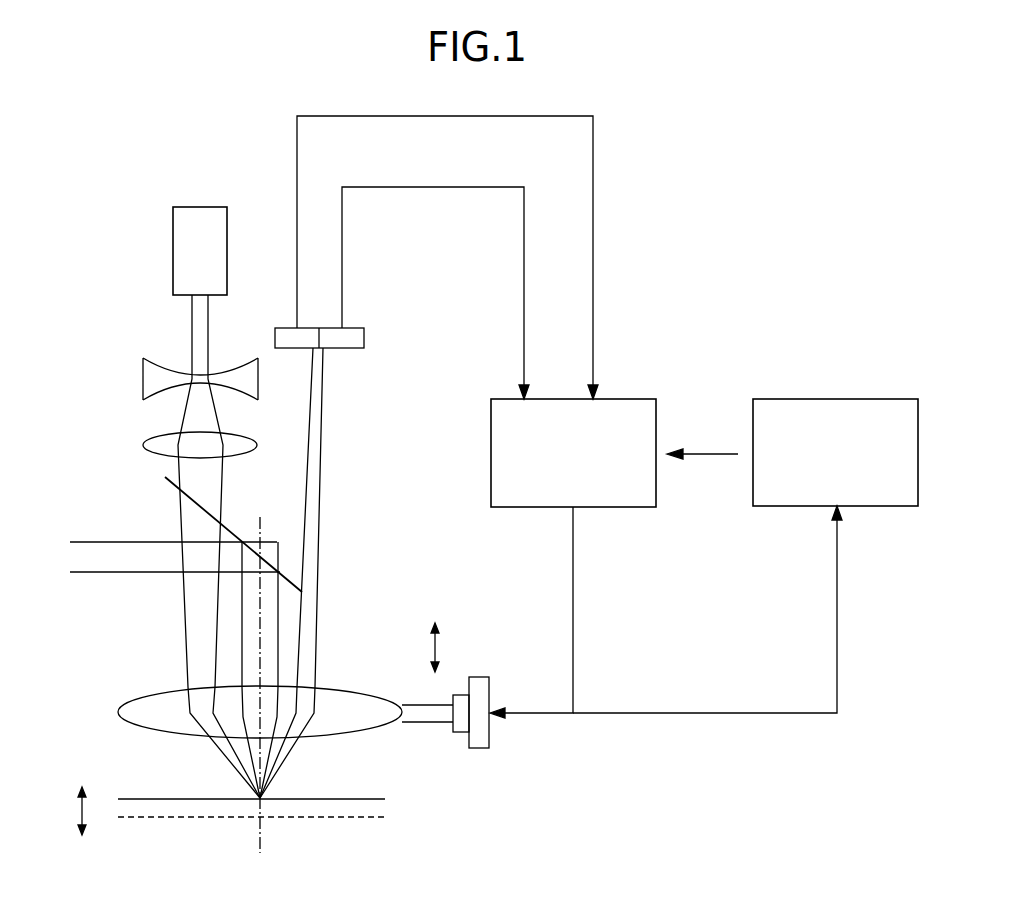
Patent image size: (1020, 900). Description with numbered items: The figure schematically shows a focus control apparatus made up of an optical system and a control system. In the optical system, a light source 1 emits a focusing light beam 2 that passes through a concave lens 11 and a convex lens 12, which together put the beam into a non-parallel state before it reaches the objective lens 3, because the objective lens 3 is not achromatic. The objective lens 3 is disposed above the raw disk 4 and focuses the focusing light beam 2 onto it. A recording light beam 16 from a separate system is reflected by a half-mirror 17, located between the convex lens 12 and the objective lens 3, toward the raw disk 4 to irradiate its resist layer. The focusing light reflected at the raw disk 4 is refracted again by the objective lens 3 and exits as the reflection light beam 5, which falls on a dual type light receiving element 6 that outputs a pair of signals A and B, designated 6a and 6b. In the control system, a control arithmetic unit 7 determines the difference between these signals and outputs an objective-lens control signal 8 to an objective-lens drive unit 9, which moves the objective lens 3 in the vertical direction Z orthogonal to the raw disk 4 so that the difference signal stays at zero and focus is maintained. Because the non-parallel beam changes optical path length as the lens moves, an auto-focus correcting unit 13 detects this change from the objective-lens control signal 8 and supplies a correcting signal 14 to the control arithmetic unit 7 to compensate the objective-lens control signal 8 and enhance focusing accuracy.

The light source 1 is at (173, 250).
The focusing light beam 2 is at (192, 335).
The objective lens 3 is at (153, 695).
The raw disk 4 is at (200, 818).
The reflection light beam 5 is at (326, 448).
The dual type light receiving element 6 is at (365, 337).
The output signal A 6a is at (343, 257).
The output signal B 6b is at (297, 150).
The control arithmetic unit 7 is at (620, 398).
The objective-lens control signal 8 is at (573, 563).
The objective-lens drive unit 9 is at (478, 750).
The concave lens 11 is at (143, 380).
The convex lens 12 is at (150, 440).
The auto-focus correcting unit 13 is at (840, 398).
The correcting signal 14 is at (700, 452).
The recording light beam 16 is at (125, 542).
The half-mirror 17 is at (227, 527).
The vertical direction Z is at (440, 645).